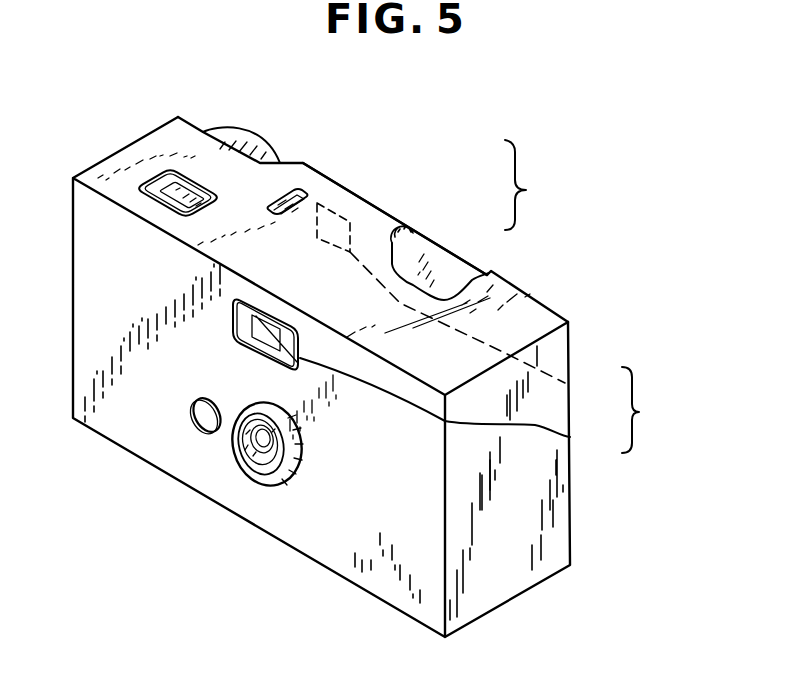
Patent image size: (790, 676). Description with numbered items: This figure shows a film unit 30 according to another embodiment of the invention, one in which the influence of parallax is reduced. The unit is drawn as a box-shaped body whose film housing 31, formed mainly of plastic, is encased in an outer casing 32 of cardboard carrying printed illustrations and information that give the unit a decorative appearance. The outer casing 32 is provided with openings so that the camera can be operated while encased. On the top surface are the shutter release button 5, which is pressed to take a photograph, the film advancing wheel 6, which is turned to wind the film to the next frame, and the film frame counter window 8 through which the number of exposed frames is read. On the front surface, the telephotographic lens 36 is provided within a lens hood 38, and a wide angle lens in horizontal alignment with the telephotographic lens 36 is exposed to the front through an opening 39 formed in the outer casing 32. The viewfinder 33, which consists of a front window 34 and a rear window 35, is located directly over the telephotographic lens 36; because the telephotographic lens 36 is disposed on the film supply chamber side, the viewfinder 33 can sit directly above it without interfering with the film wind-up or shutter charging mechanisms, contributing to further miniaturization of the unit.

The shutter release button 5 is at (172, 182).
The film advancing wheel 6 is at (255, 140).
The film frame counter window 8 is at (281, 205).
The film unit 30 is at (538, 185).
The film housing 31 is at (445, 250).
The outer casing 32 is at (390, 209).
The viewfinder 33 is at (651, 410).
The front window 34 is at (570, 437).
The rear window 35 is at (565, 383).
The telephotographic lens 36 is at (262, 455).
The lens hood 38 is at (300, 452).
The opening 39 is at (193, 416).